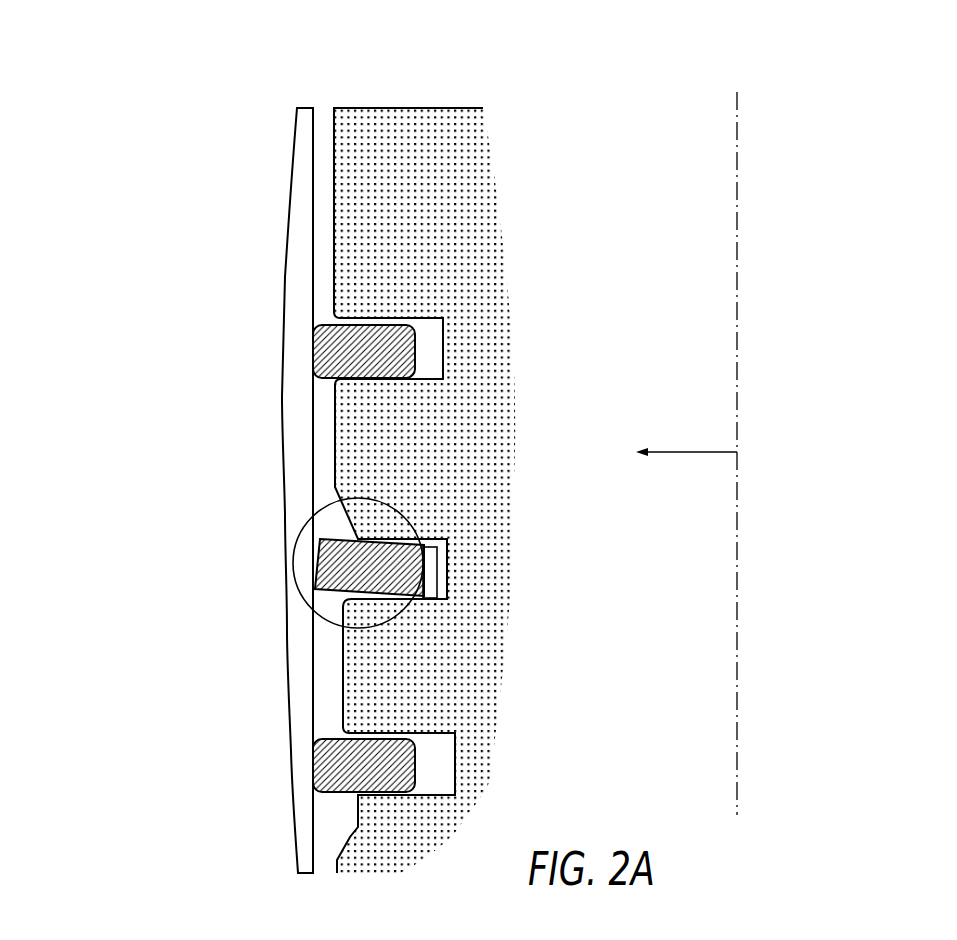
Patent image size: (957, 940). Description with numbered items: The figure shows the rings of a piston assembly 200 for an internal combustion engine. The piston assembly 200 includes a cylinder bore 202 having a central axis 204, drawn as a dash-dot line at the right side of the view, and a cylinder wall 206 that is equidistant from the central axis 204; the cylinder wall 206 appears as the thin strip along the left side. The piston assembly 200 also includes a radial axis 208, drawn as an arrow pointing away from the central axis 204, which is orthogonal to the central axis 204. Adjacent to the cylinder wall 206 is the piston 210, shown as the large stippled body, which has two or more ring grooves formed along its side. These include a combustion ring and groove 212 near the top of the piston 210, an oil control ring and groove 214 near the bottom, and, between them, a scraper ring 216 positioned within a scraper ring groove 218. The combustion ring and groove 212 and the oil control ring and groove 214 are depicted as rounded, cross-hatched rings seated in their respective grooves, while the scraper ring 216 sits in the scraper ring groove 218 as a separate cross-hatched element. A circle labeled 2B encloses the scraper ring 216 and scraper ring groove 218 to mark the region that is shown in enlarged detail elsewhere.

The piston assembly 200 is at (148, 150).
The cylinder bore 202 is at (371, 66).
The central axis 204 is at (738, 468).
The cylinder wall 206 is at (314, 128).
The radial axis 208 is at (681, 450).
The piston 210 is at (428, 135).
The combustion ring and groove 212 is at (433, 347).
The oil control ring and groove 214 is at (438, 763).
The scraper ring 216 is at (315, 556).
The scraper ring groove 218 is at (450, 570).
The detail view circle 2B is at (298, 565).